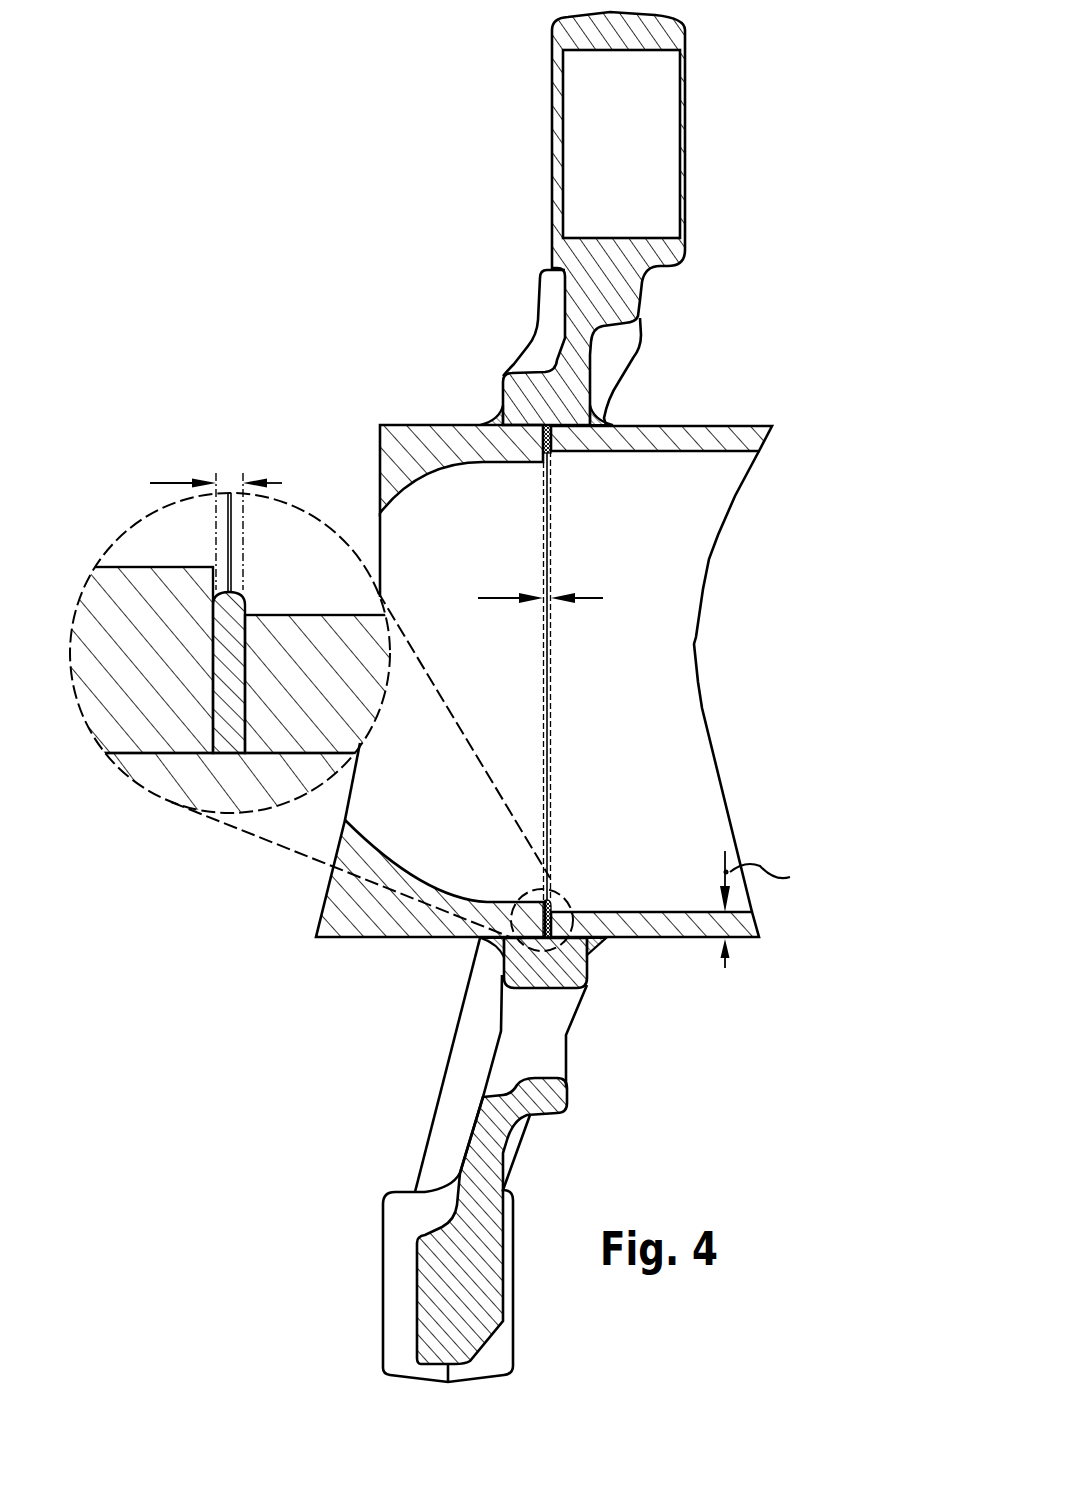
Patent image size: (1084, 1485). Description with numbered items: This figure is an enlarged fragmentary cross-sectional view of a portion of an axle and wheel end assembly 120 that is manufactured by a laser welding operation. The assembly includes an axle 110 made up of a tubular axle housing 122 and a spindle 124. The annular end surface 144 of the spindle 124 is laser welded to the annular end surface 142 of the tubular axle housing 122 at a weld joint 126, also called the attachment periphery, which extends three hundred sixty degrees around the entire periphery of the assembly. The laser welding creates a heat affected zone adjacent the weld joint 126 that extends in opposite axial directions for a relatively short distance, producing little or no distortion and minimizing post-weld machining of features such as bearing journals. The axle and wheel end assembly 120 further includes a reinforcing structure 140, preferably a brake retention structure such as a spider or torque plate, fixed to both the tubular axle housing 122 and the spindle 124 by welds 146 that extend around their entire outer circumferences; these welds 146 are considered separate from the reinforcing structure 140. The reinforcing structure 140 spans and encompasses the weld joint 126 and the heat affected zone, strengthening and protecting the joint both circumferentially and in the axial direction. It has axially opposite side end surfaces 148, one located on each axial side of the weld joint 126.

The axle 110 is at (653, 939).
The axle and wheel end assembly 120 is at (362, 293).
The tubular axle housing 122 is at (713, 443).
The spindle 124 is at (417, 447).
The weld joint 126 is at (230, 536).
The reinforcing structure 140 is at (643, 298).
The end surface of tubular axle housing 142 is at (505, 947).
The end surface of spindle 144 is at (550, 435).
The welds 146 is at (487, 412).
The side end surfaces 148 is at (490, 414).